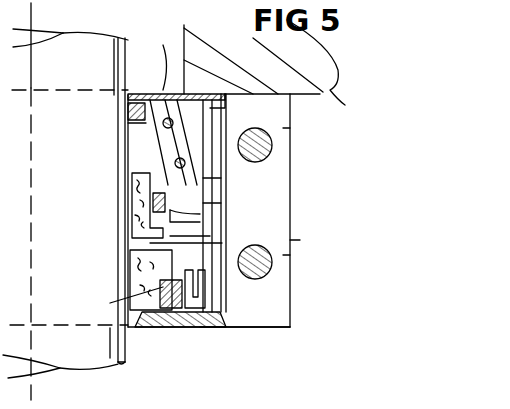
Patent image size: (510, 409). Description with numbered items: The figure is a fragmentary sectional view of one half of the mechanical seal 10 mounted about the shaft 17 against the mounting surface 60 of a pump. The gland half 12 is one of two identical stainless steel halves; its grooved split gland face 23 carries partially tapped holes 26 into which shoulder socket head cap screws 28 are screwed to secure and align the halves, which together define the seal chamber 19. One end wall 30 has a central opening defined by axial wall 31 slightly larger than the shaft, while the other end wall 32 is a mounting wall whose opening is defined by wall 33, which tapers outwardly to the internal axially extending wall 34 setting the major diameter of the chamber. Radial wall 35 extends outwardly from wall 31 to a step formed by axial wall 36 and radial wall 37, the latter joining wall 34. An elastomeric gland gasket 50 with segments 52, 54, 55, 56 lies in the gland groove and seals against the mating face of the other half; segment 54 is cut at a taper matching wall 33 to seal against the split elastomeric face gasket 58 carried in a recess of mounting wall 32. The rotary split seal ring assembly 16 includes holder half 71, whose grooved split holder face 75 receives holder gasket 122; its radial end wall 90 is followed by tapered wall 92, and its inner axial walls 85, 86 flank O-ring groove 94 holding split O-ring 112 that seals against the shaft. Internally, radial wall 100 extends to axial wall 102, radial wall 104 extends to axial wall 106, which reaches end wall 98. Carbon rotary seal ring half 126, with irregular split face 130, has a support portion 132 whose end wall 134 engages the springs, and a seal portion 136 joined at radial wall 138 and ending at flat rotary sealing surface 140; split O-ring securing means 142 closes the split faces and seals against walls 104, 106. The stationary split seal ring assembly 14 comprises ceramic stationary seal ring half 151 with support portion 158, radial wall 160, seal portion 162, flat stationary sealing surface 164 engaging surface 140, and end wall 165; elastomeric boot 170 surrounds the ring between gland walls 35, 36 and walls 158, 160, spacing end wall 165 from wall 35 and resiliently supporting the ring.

The mechanical seal 10 is at (260, 355).
The gland half 12 is at (292, 318).
The stationary split seal ring assembly 14 is at (128, 262).
The rotary split seal ring assembly 16 is at (128, 181).
The shaft 17 is at (120, 363).
The seal chamber 19 is at (222, 240).
The grooved split gland face 23 is at (282, 304).
The partially tapped and partially untapped holes 26 is at (272, 140).
The shoulder socket head cap screws 28 is at (290, 128).
The end wall 30 is at (274, 328).
The axial wall 31 is at (133, 328).
The mounting wall 32 is at (282, 90).
The wall 33 is at (222, 96).
The internal axially extending wall 34 is at (200, 214).
The radial wall 35 is at (165, 328).
The axial wall 36 is at (172, 322).
The radial wall 37 is at (215, 268).
The gland gasket 50 is at (223, 187).
The gland gasket segment 52 is at (241, 203).
The gland gasket segment 54 is at (205, 94).
The gland gasket segment 55 is at (200, 306).
The gland gasket segment 56 is at (217, 302).
The face gasket 58 is at (192, 94).
The mounting surface 60 is at (324, 68).
The holder half 71 is at (164, 64).
The grooved split holder face 75 is at (165, 80).
The inner axial wall 85 is at (128, 125).
The inner axial wall 86 is at (128, 98).
The radial end wall 90 is at (163, 100).
The tapered wall 92 is at (212, 113).
The O-ring groove 94 is at (128, 113).
The end wall 98 is at (200, 222).
The radial wall 100 is at (145, 173).
The axial wall 102 is at (155, 152).
The radial wall 104 is at (221, 203).
The axial wall 106 is at (210, 236).
The split O-ring 112 is at (128, 103).
The holder gasket 122 is at (233, 131).
The rotary seal ring half 126 is at (132, 184).
The irregular split face 130 is at (140, 222).
The support portion 132 is at (221, 178).
The end wall 134 is at (150, 168).
The seal portion 136 is at (140, 243).
The radial wall 138 is at (150, 210).
The rotary sealing surface 140 is at (198, 244).
The split O-ring securing means 142 is at (153, 196).
The stationary seal ring half 151 is at (130, 320).
The support portion 158 is at (145, 288).
The radial wall 160 is at (150, 300).
The seal portion 162 is at (203, 255).
The stationary sealing surface 164 is at (148, 255).
The end wall 165 is at (170, 328).
The boot securing means 170 is at (147, 293).